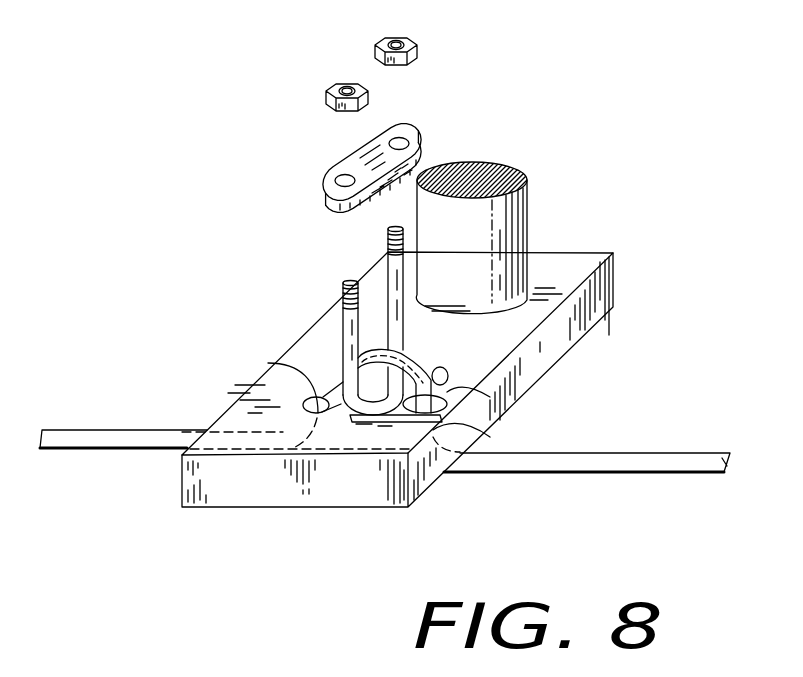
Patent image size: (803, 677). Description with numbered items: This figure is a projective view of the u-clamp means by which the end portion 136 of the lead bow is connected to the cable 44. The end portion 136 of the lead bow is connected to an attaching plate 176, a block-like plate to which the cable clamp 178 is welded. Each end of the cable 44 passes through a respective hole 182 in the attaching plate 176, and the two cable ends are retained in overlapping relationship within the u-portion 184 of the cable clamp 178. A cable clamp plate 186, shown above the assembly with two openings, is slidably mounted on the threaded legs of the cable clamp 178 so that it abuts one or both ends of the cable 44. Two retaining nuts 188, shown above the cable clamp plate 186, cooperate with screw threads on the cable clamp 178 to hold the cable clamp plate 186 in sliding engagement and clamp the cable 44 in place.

The cable 44 is at (120, 445).
The end portion of the lead bow 136 is at (508, 228).
The attaching plate 176 is at (575, 320).
The cable clamp 178 is at (342, 301).
The hole 182 is at (282, 365).
The u-portion 184 is at (478, 432).
The cable clamp plate 186 is at (414, 126).
The retaining nuts 188 is at (414, 38).